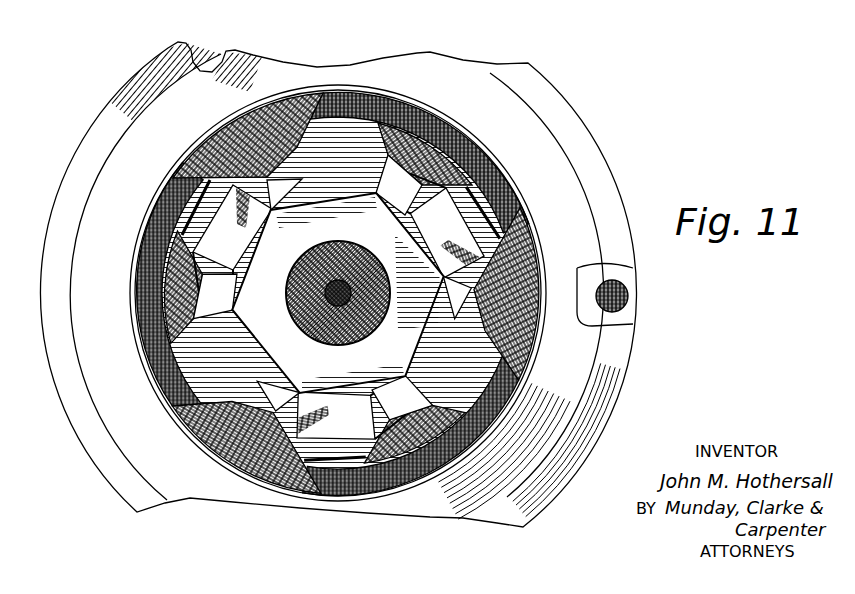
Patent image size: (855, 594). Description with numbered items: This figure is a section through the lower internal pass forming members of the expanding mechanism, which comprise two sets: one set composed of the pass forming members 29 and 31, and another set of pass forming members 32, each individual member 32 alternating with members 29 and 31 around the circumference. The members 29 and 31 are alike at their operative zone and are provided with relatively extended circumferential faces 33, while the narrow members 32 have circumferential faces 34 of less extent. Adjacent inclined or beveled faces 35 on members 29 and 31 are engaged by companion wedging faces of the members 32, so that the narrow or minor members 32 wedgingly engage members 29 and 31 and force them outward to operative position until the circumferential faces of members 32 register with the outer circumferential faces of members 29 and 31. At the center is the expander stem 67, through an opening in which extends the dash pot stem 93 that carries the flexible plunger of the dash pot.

The pass forming member 29 is at (273, 100).
The pass forming member 31 is at (490, 213).
The pass forming member 32 is at (520, 235).
The circumferential face 33 is at (435, 122).
The circumferential face 34 is at (343, 90).
The inclined or beveled face 35 is at (410, 80).
The stem 67 is at (302, 302).
The stem 93 is at (335, 290).